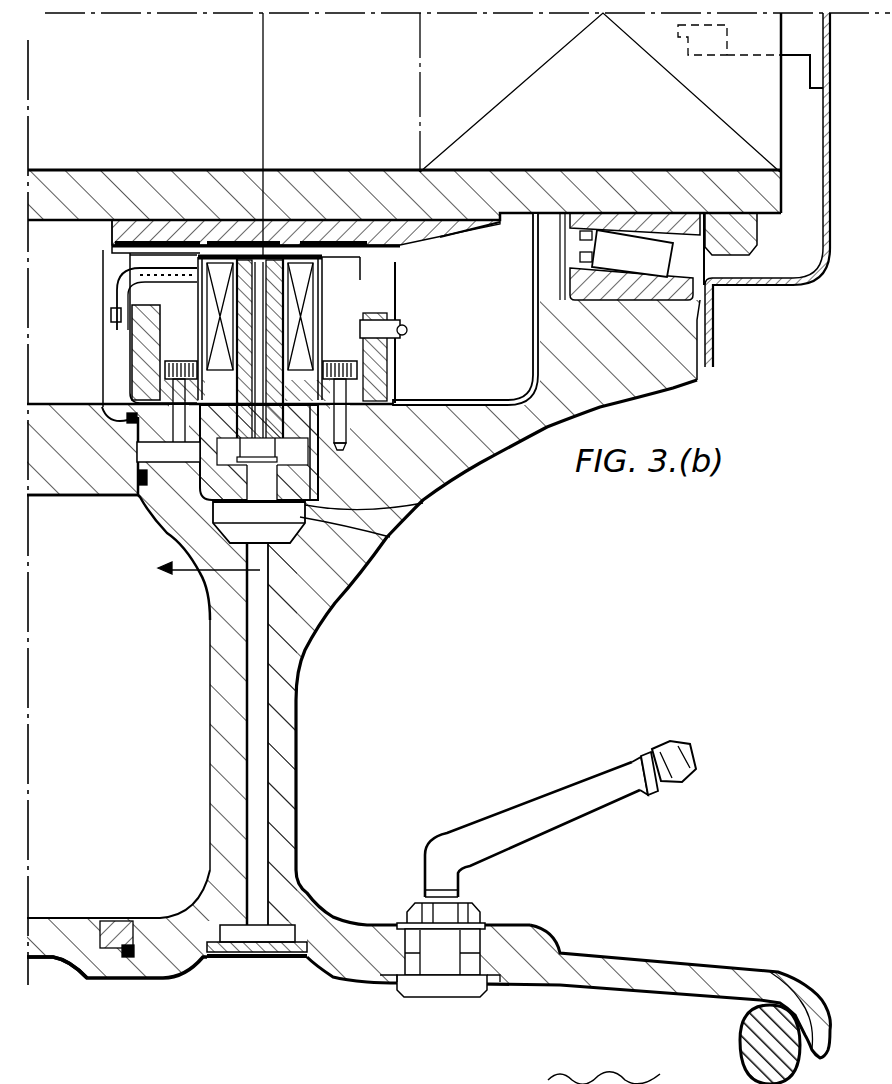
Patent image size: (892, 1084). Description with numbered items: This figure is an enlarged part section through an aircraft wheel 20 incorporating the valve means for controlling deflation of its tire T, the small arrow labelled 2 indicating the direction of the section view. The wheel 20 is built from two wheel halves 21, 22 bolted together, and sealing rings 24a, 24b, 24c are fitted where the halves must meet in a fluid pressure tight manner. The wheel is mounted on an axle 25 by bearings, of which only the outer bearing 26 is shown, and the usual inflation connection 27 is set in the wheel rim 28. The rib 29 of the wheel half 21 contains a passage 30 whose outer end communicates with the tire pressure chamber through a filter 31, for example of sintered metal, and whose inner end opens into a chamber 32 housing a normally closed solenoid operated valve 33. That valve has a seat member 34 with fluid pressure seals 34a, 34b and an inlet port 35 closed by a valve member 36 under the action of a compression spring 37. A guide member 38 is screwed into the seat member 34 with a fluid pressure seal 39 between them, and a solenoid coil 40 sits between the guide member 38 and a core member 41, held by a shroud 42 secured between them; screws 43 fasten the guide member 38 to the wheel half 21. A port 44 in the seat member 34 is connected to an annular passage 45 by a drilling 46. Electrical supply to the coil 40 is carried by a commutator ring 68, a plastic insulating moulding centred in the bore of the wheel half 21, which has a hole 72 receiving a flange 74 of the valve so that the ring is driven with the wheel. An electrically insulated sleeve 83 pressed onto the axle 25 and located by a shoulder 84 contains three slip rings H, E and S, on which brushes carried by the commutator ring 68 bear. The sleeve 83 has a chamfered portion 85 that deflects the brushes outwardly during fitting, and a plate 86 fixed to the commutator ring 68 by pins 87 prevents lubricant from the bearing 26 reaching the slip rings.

The shoulder 84 is at (113, 220).
The slip ring H is at (158, 244).
The slip ring E is at (222, 244).
The electrically insulated sleeve 83 is at (290, 240).
The axle 25 is at (328, 190).
The slip ring S is at (357, 246).
The outer bearing 26 is at (650, 225).
The shroud 42 is at (128, 253).
The compression spring 37 is at (285, 278).
The core member 41 is at (325, 263).
The solenoid operated valve 33 is at (322, 292).
The solenoid coil 40 is at (305, 317).
The fluid pressure seal 39 is at (312, 356).
The hole 72 is at (396, 312).
The pins 87 is at (407, 328).
The screws 43 is at (401, 345).
The guide member 38 is at (397, 370).
The flange 74 is at (397, 385).
The commutator ring 68 is at (132, 340).
The plate 86 is at (400, 265).
The chamfered portion 85 is at (457, 231).
The sealing ring 24c is at (105, 420).
The annular passage 45 is at (147, 452).
The sealing ring 24b is at (137, 478).
The drilling 46 is at (137, 493).
The port 44 is at (158, 500).
The inlet port 35 is at (213, 520).
The viewing direction arrow 2 is at (202, 581).
The fluid pressure seal 34a is at (320, 432).
The valve member 36 is at (313, 457).
The seat member 34 is at (300, 482).
The fluid pressure seal 34b is at (390, 500).
The chamber 32 is at (380, 537).
The aircraft wheel 20 is at (332, 620).
The passage 30 is at (265, 680).
The rib 29 is at (287, 750).
The wheel half 21 is at (283, 812).
The inflation connection 27 is at (555, 795).
The wheel rim 28 is at (663, 935).
The sealing ring 24a is at (130, 947).
The wheel half 22 is at (87, 977).
The filter 31 is at (287, 963).
The tire T is at (750, 1048).